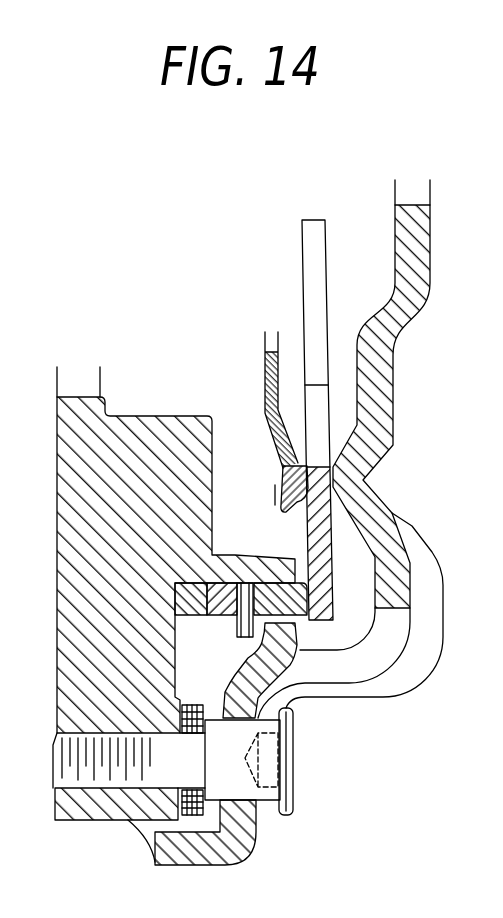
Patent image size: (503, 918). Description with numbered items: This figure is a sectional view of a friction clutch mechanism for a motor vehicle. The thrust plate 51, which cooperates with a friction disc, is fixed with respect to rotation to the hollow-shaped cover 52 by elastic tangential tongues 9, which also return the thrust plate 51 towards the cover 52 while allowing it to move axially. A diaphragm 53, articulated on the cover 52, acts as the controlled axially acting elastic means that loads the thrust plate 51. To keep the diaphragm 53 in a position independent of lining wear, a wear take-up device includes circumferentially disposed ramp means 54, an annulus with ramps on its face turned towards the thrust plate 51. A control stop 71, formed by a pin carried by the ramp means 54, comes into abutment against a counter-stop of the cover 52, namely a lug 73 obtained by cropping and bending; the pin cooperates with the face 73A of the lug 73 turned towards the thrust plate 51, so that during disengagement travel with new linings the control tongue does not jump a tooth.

The tangential tongues 9 is at (187, 812).
The thrust plate 51 is at (160, 412).
The cover 52 is at (399, 422).
The diaphragm 53 is at (300, 265).
The ramp means 54 is at (241, 577).
The control stop 71 is at (236, 640).
The lug 73 is at (262, 680).
The face 73A is at (233, 670).